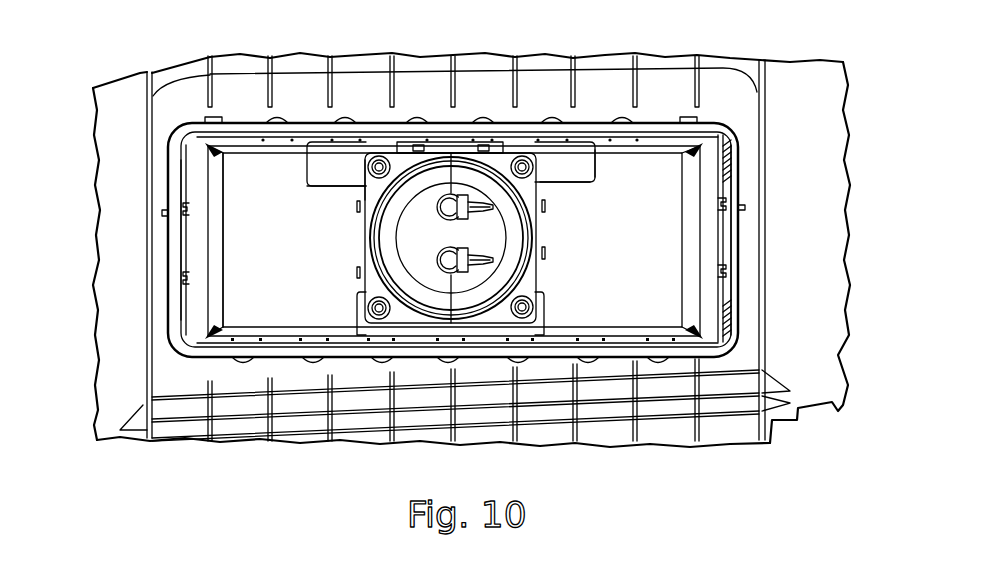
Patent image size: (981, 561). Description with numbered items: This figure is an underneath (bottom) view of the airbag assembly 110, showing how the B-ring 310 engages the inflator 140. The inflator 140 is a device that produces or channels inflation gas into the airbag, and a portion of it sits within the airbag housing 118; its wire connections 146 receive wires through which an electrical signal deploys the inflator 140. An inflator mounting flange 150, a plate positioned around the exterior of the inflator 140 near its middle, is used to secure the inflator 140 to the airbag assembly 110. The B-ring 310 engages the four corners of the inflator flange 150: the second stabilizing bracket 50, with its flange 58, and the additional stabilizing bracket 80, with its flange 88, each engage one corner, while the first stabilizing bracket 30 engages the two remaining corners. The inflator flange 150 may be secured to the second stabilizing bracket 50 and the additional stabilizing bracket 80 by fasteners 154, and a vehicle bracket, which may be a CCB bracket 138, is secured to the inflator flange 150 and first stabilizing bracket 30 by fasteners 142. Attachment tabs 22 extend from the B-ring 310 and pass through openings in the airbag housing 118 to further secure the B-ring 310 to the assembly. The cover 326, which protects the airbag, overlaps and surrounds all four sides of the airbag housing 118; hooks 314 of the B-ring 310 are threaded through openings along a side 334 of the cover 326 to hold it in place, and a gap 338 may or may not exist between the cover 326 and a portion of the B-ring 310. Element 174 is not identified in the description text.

The upper rail 174 is at (488, 58).
The side 334 is at (600, 80).
The hooks 314 is at (630, 115).
The cover 326 is at (443, 107).
The gap 338 is at (193, 173).
The additional stabilizing bracket 80 is at (296, 167).
The flange 88 is at (310, 184).
The fasteners 154 is at (534, 163).
The inflator 140 is at (417, 236).
The airbag housing 118 is at (280, 296).
The fasteners 142 is at (534, 307).
The B-ring 310 is at (193, 243).
The second stabilizing bracket 50 is at (597, 160).
The flange 58 is at (562, 182).
The CCB bracket 138 is at (730, 167).
The attachment tabs 22 is at (724, 276).
The airbag assembly 110 is at (752, 238).
The inflator mounting flange 150 is at (538, 278).
The first stabilizing bracket 30 is at (522, 332).
The wire connections 146 is at (448, 264).